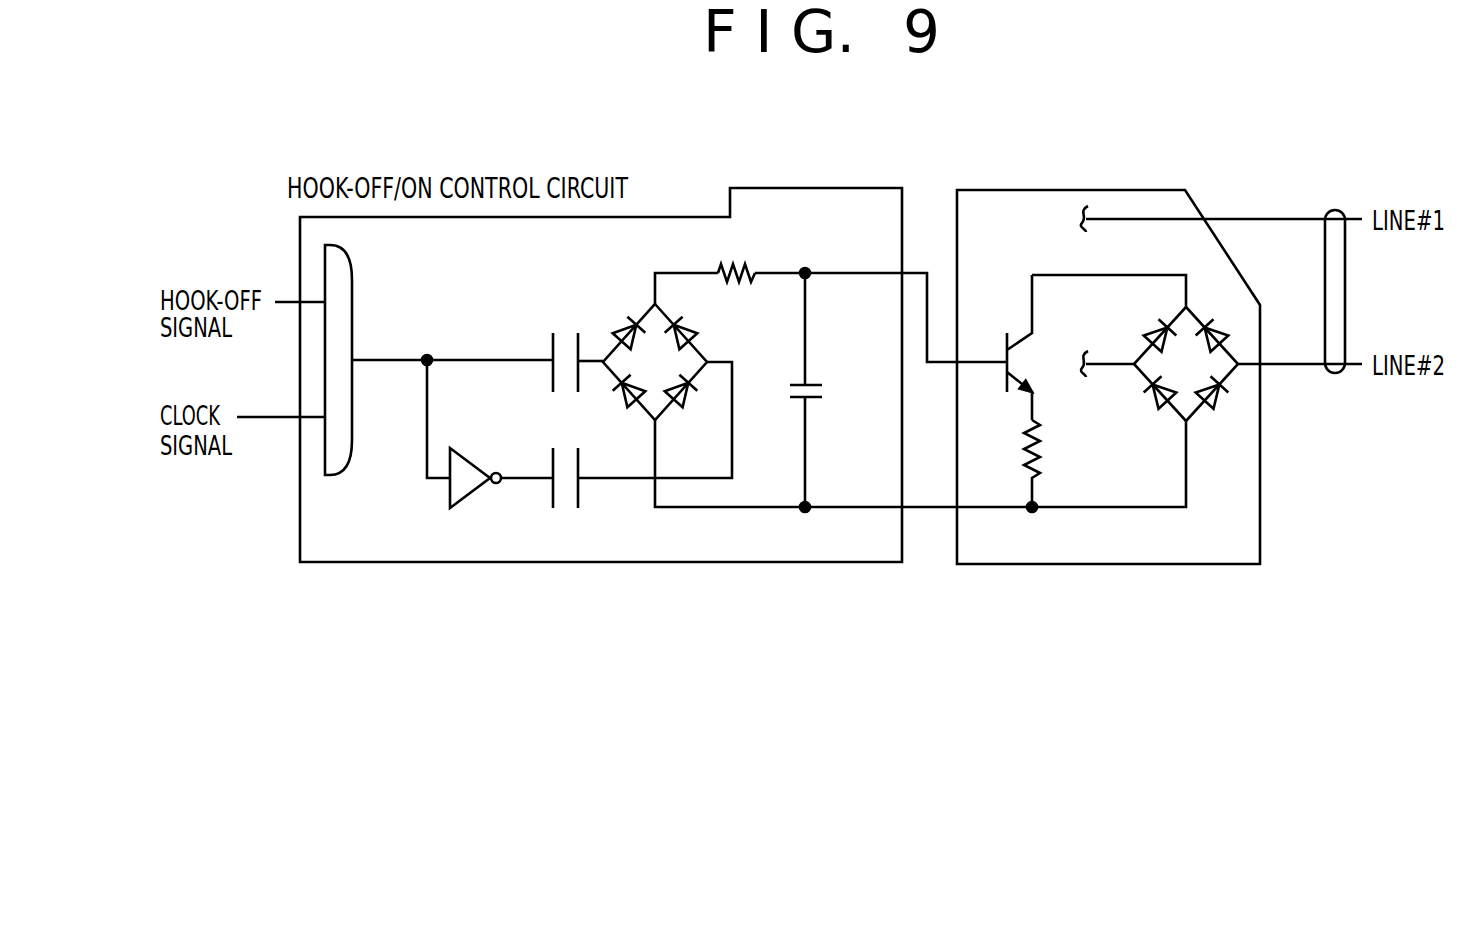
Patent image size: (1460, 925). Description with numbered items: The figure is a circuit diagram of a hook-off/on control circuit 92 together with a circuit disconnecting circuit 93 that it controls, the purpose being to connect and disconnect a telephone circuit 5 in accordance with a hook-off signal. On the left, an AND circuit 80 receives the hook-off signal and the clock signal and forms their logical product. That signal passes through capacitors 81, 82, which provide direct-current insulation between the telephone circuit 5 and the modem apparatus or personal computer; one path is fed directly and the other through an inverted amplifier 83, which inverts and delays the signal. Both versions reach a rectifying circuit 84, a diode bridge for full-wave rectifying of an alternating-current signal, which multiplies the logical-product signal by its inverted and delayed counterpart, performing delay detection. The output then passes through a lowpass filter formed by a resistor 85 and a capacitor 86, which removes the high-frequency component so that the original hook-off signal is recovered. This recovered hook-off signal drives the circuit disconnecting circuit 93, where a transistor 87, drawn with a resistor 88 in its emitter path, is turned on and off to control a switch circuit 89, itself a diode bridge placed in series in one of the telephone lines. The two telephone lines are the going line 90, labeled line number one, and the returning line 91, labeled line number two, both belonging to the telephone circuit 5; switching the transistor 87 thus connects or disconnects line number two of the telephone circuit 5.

The telephone circuit 5 is at (1342, 214).
The AND circuit 80 is at (352, 280).
The capacitor 81 is at (545, 354).
The capacitor 82 is at (582, 500).
The inverted amplifier 83 is at (480, 485).
The rectifying circuit 84 is at (695, 340).
The resistor 85 is at (730, 270).
The capacitor 86 is at (820, 390).
The transistor 87 is at (1004, 366).
The resistor 88 is at (1040, 448).
The switch circuit 89 is at (1192, 422).
The going line 90 is at (1265, 216).
The returning line 91 is at (1300, 363).
The hook-off/on control circuit 92 is at (842, 188).
The circuit disconnecting circuit 93 is at (1148, 189).